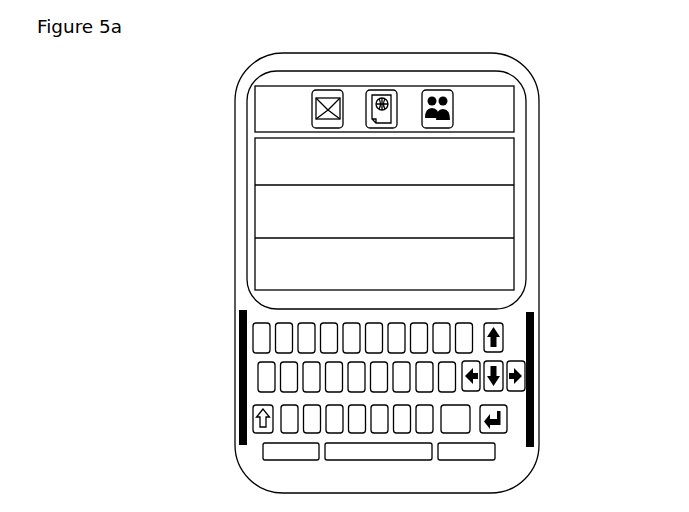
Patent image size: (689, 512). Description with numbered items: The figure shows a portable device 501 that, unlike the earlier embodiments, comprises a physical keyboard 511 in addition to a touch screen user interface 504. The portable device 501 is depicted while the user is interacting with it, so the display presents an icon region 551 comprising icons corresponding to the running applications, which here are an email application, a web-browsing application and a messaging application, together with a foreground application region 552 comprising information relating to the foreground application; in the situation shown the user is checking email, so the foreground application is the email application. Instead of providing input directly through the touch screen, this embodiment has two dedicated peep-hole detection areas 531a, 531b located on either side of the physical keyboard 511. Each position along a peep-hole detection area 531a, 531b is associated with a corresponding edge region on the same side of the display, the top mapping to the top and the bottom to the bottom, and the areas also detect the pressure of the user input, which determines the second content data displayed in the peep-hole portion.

The mobile communication device 501 is at (588, 64).
The touch screen user interface 504 is at (388, 214).
The physical keyboard 511 is at (255, 327).
The peep-hole detection area 531a is at (240, 385).
The peep-hole detection area 531b is at (533, 380).
The icon region 551 is at (255, 132).
The foreground application region 552 is at (255, 198).